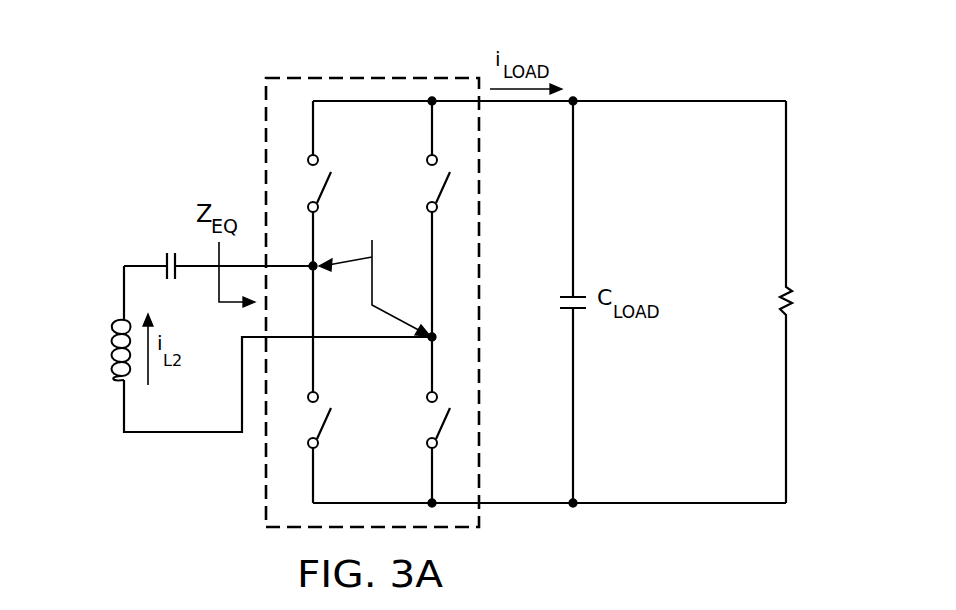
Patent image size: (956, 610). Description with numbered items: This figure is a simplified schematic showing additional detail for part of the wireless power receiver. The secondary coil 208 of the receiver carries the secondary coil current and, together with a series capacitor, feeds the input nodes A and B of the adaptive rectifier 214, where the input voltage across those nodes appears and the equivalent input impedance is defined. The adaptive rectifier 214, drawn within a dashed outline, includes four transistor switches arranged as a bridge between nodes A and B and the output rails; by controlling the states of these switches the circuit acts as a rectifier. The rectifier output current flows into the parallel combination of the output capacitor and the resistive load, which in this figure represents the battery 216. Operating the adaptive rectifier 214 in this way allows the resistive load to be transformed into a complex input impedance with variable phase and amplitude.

The secondary coil 208 is at (112, 350).
The adaptive rectifier 214 is at (353, 70).
The battery 216 is at (783, 300).